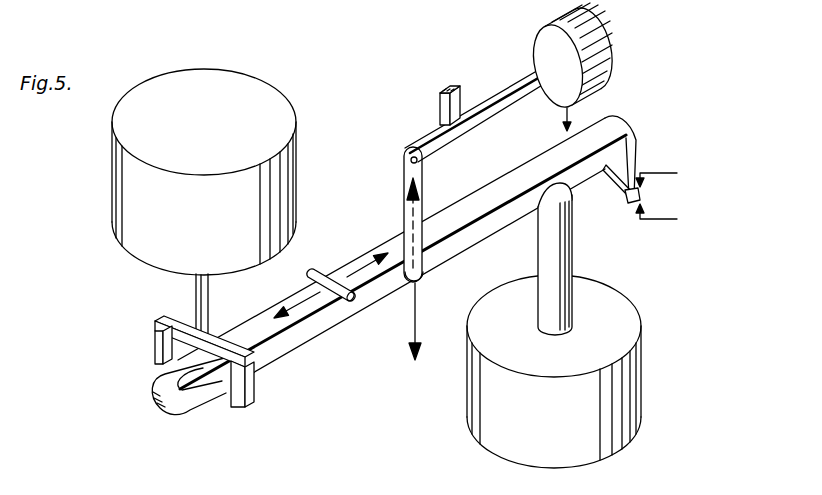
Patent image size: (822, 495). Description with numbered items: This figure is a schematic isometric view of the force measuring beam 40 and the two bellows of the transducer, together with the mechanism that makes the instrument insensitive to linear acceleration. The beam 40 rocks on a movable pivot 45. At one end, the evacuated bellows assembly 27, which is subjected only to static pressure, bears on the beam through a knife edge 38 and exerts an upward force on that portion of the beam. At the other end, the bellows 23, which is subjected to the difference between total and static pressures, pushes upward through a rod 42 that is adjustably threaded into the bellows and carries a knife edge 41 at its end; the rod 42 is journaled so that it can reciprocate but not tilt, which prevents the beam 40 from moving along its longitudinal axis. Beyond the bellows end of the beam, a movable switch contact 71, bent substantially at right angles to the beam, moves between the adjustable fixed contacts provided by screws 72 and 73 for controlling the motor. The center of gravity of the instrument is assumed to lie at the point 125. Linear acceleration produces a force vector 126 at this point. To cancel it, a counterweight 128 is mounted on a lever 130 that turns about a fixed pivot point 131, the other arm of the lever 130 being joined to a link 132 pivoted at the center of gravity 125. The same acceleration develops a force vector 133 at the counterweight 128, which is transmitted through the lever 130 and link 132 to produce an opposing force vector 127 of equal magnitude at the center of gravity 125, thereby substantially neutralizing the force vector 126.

The bellows 23 is at (642, 354).
The evacuated bellows assembly 27 is at (263, 92).
The knife edge 38 is at (215, 391).
The beam 40 is at (292, 349).
The knife edge 41 is at (568, 187).
The rod 42 is at (573, 238).
The movable pivot 45 is at (357, 299).
The movable switch contact 71 is at (641, 195).
The screw 72 is at (642, 209).
The screw 73 is at (642, 184).
The center of gravity 125 is at (423, 278).
The force vector 126 is at (418, 316).
The force vector 127 is at (422, 201).
The counterweight 128 is at (610, 44).
The lever 130 is at (508, 90).
The fixed pivot point 131 is at (458, 126).
The link 132 is at (406, 176).
The force vector 133 is at (563, 120).